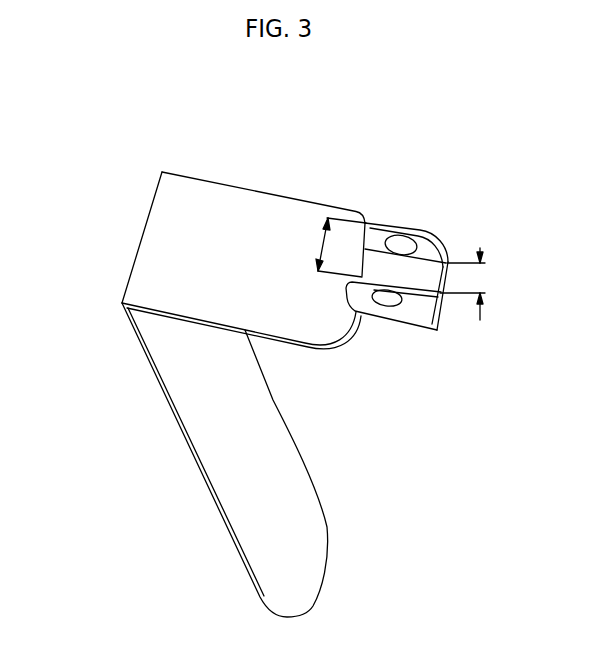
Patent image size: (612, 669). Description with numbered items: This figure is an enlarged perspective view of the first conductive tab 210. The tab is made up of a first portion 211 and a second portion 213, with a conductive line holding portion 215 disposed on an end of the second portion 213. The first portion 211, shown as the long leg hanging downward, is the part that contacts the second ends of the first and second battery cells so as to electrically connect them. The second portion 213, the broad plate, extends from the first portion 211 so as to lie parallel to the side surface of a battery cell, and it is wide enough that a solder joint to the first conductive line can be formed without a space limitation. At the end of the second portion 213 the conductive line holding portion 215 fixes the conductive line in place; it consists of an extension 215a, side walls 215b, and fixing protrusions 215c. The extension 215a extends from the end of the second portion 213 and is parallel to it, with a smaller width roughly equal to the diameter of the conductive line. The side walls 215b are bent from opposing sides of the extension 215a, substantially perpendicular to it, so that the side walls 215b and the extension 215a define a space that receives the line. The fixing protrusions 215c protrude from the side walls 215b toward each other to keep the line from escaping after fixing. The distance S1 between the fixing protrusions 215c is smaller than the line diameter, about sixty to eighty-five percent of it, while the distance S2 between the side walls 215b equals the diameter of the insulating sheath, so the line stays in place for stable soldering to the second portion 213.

The first conductive tab 210 is at (115, 172).
The first portion 211 is at (159, 357).
The second portion 213 is at (138, 256).
The conductive line holding portion 215 is at (485, 161).
The extension 215a is at (433, 268).
The side walls 215b is at (380, 222).
The fixing protrusions 215c is at (400, 243).
The distance between the fixing protrusions S1 is at (471, 270).
The distance between the side walls S2 is at (329, 247).